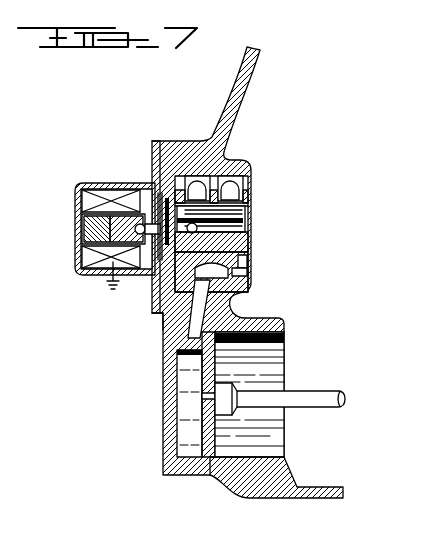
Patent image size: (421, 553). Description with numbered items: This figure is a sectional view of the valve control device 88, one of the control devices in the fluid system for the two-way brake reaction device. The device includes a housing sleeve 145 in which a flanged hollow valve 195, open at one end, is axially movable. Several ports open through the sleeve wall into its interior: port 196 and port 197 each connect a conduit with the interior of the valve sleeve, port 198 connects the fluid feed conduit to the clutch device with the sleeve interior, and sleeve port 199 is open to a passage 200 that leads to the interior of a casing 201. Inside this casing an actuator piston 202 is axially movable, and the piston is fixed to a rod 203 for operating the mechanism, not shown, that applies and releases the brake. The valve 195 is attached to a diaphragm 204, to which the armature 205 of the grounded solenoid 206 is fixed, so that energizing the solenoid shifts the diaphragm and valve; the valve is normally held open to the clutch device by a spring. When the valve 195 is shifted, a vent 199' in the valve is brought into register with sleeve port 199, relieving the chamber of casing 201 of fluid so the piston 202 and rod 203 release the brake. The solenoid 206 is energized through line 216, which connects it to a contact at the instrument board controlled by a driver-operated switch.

The valve control device 88 is at (154, 309).
The housing sleeve 145 is at (254, 184).
The flanged hollow valve 195 is at (248, 215).
The port 196 is at (216, 174).
The port 197 is at (250, 192).
The port 198 is at (248, 259).
The sleeve port 199 is at (259, 277).
The vent 199' is at (236, 236).
The passage 200 is at (235, 304).
The casing 201 is at (180, 392).
The actuator piston 202 is at (200, 413).
The rod 203 is at (314, 392).
The diaphragm 204 is at (156, 198).
The armature 205 is at (133, 270).
The solenoid 206 is at (96, 272).
The line 216 is at (92, 184).